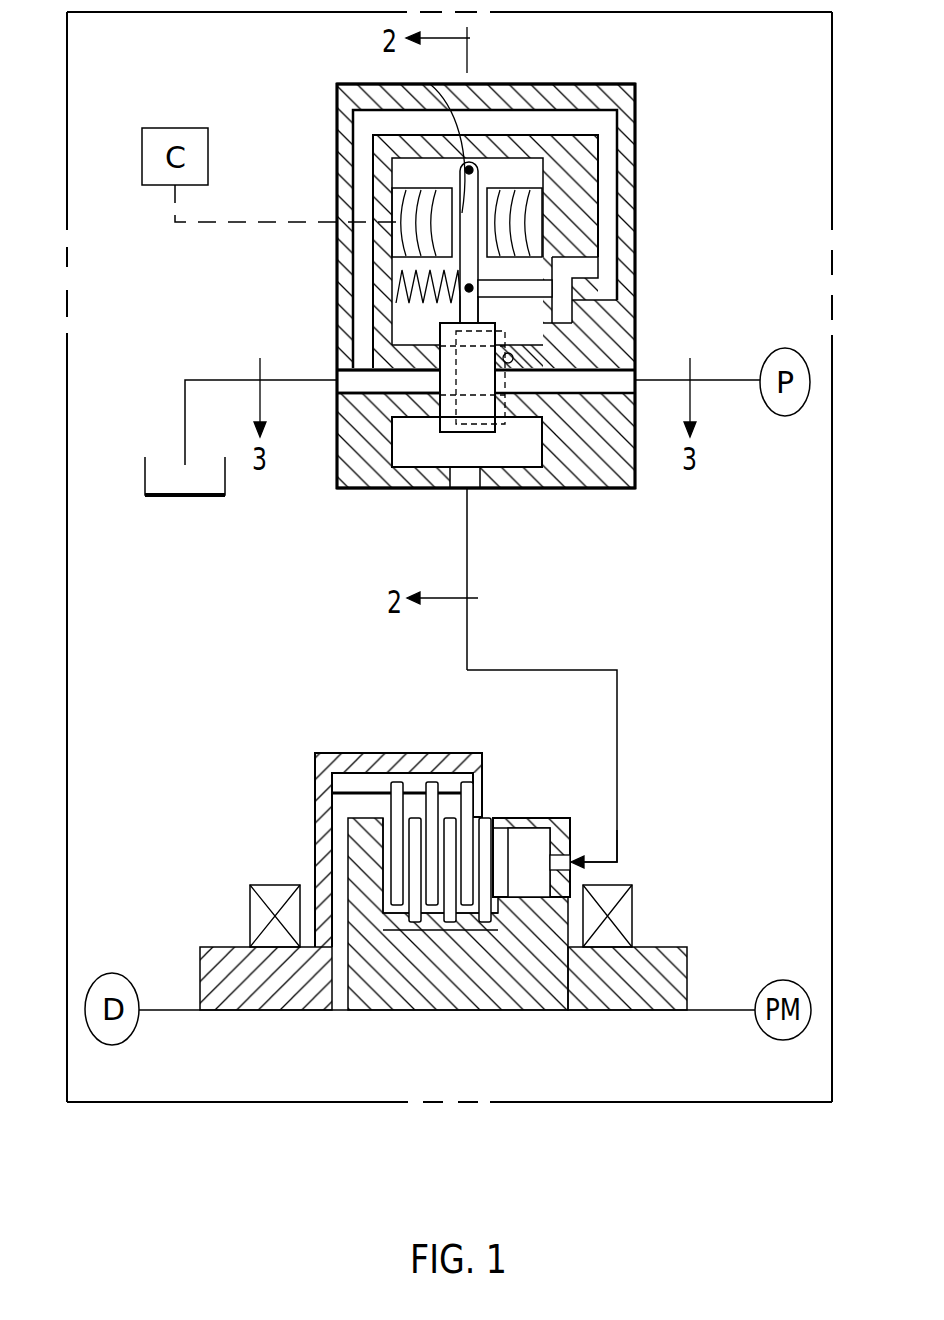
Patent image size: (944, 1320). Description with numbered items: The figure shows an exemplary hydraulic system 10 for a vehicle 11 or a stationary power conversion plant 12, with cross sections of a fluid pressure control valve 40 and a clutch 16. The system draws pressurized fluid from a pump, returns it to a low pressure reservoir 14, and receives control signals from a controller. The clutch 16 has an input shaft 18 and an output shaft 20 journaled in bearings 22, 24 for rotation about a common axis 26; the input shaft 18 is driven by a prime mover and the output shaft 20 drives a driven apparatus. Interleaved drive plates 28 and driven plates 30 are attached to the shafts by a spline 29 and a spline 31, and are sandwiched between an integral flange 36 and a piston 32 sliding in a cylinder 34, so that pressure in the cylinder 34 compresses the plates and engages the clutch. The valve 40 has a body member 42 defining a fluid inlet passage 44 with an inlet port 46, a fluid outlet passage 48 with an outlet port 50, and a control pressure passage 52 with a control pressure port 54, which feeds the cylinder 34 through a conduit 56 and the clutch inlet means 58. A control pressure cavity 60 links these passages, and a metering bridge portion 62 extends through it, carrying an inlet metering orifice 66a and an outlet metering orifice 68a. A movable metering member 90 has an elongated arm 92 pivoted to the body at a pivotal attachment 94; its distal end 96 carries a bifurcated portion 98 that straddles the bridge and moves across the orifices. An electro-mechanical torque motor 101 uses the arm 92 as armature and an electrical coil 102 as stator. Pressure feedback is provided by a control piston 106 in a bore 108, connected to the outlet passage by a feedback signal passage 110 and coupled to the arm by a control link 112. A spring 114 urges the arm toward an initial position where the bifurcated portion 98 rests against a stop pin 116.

The hydraulic system 10 is at (747, 215).
The vehicle 11 is at (832, 232).
The stationary power conversion plant 12 is at (832, 402).
The low pressure reservoir 14 is at (145, 477).
The clutch 16 is at (680, 742).
The input shaft 18 is at (672, 947).
The output shaft 20 is at (210, 947).
The bearing 22 is at (628, 885).
The bearing 24 is at (268, 885).
The common axis 26 is at (715, 1010).
The drive plates 28 is at (485, 925).
The spline 29 is at (413, 918).
The driven plates 30 is at (467, 782).
The spline 31 is at (345, 793).
The piston 32 is at (503, 826).
The cylinder 34 is at (547, 879).
The integral flange 36 is at (357, 862).
The fluid pressure control valve 40 is at (660, 140).
The body member 42 is at (635, 92).
The fluid inlet passage 44 is at (590, 470).
The inlet port 46 is at (650, 378).
The fluid outlet passage 48 is at (345, 385).
The outlet port 50 is at (337, 377).
The control pressure passage 52 is at (495, 475).
The control pressure port 54 is at (472, 485).
The conduit 56 is at (620, 672).
The inlet means 58 is at (620, 840).
The control pressure cavity 60 is at (537, 329).
The metering bridge portion 62 is at (500, 470).
The inlet metering orifice 66a is at (468, 440).
The outlet metering orifice 68a is at (462, 432).
The movable metering member 90 is at (440, 337).
The elongated arm 92 is at (400, 140).
The pivotal attachment 94 is at (430, 84).
The distal end 96 is at (398, 235).
The bifurcated portion 98 is at (448, 400).
The electro-mechanical torque motor 101 is at (512, 196).
The electrical coil 102 is at (468, 167).
The control piston 106 is at (585, 232).
The bore 108 is at (597, 262).
The feedback signal passage 110 is at (560, 117).
The control link 112 is at (560, 300).
The spring 114 is at (405, 280).
The stop pin 116 is at (590, 395).